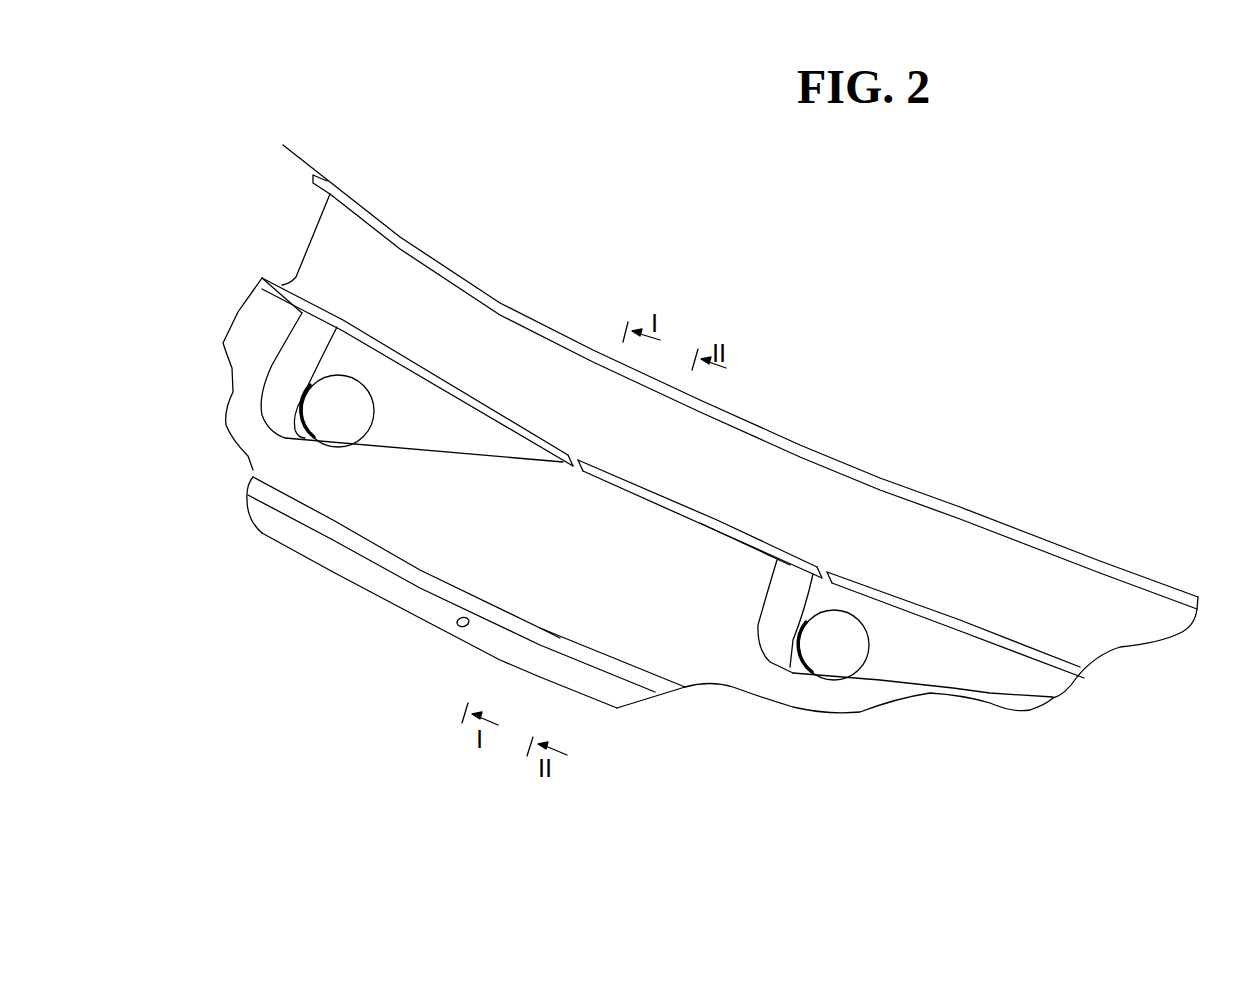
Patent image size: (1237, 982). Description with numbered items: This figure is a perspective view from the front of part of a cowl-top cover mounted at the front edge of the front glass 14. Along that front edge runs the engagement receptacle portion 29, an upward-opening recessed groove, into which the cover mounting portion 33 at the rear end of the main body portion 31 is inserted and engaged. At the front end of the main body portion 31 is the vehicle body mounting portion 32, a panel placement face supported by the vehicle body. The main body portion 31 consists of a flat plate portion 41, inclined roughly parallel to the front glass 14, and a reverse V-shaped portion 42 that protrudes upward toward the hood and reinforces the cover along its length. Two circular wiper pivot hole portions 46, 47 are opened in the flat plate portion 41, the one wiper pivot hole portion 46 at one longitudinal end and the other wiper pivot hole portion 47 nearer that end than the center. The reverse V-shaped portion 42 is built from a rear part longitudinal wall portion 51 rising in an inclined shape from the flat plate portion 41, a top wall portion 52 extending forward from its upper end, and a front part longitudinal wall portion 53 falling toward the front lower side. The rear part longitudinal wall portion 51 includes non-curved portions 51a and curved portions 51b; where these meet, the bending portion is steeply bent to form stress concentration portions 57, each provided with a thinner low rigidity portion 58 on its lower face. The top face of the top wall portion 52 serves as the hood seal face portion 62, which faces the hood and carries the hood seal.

The front glass 14 is at (1048, 485).
The engagement receptacle portion 29 is at (918, 493).
The main body portion 31 is at (712, 673).
The vehicle body mounting portion 32 is at (383, 585).
The cover mounting portion 33 is at (987, 524).
The flat plate portion 41 is at (1078, 577).
The reverse V-shaped portion 42 is at (543, 618).
The one wiper pivot hole portion 46 is at (366, 392).
The other wiper pivot hole portion 47 is at (861, 626).
The rear part longitudinal wall portion 51 is at (757, 538).
The non-curved portion 51a is at (717, 520).
The curved portion 51b is at (252, 468).
The top wall portion 52 is at (338, 513).
The front part longitudinal wall portion 53 is at (287, 505).
The stress concentration portion 57 is at (788, 553).
The low rigidity portion 58 is at (337, 313).
The hood seal face portion 62 is at (623, 650).